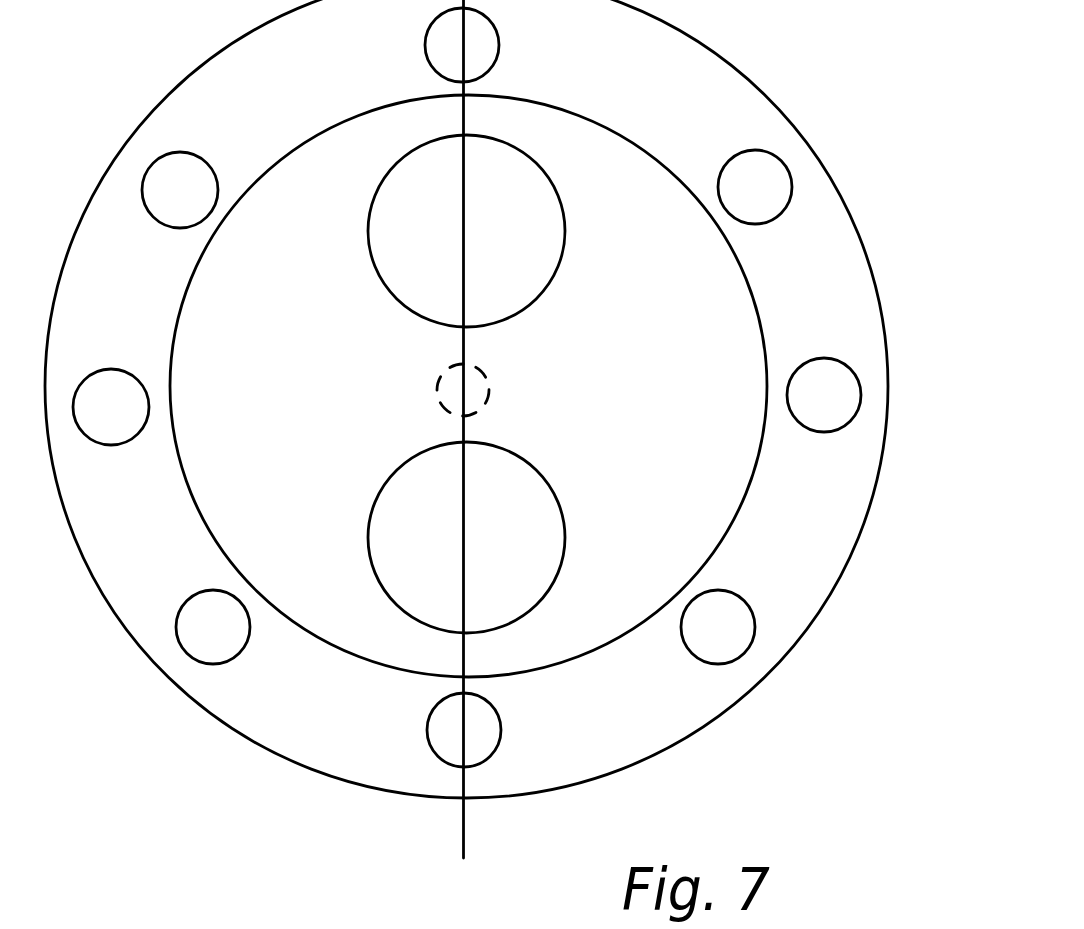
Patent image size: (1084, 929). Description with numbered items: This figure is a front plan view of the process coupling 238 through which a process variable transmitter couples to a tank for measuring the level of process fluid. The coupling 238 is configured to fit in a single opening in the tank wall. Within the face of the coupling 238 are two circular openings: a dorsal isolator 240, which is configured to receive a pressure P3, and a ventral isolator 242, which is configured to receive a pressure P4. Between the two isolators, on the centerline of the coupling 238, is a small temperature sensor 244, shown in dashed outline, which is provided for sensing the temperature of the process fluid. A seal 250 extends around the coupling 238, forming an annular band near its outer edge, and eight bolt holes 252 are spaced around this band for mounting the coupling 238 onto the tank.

The process coupling 238 is at (760, 82).
The dorsal isolator 240 is at (548, 258).
The ventral isolator 242 is at (555, 562).
The temperature sensor 244 is at (484, 378).
The seal 250 is at (835, 252).
The bolt holes 252 is at (843, 392).